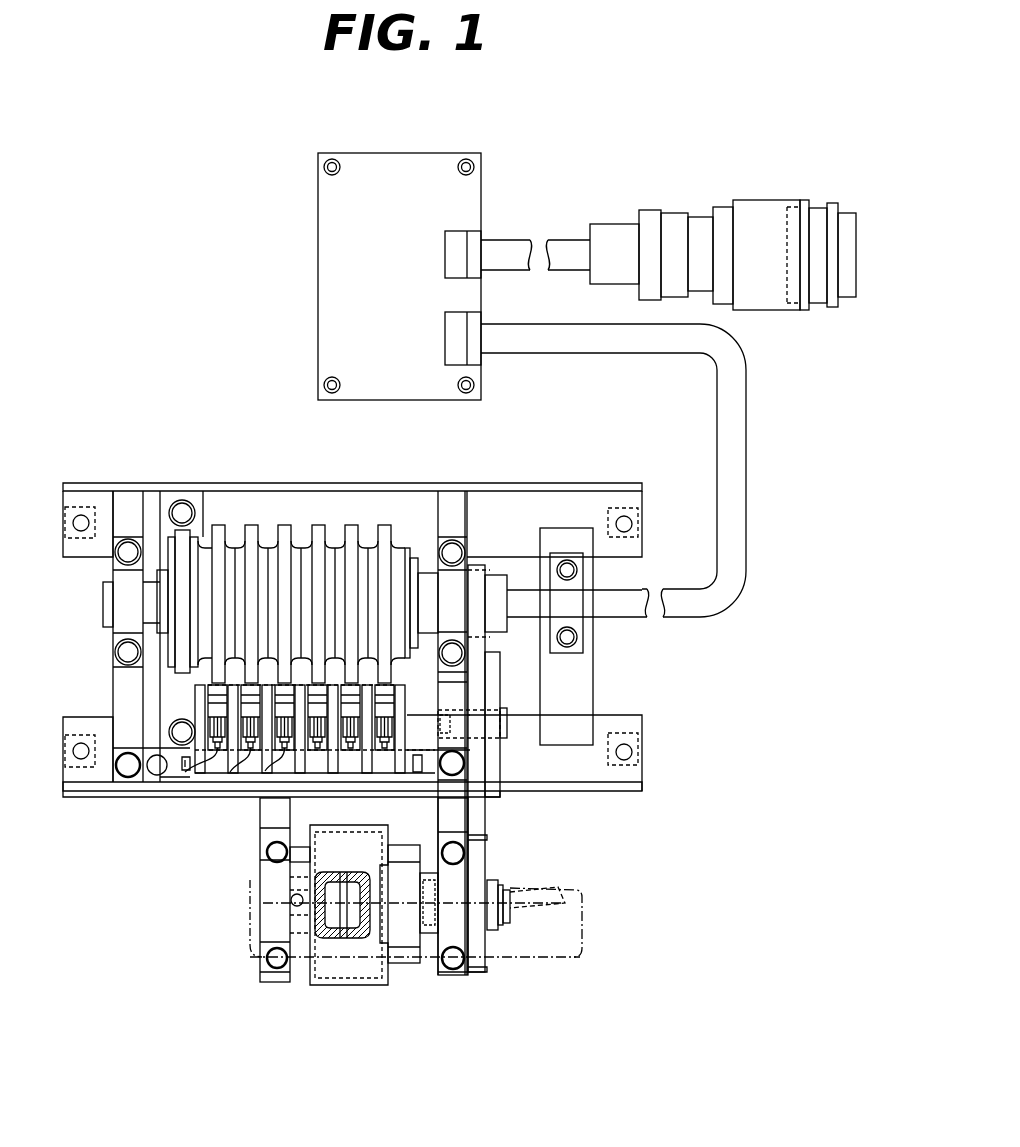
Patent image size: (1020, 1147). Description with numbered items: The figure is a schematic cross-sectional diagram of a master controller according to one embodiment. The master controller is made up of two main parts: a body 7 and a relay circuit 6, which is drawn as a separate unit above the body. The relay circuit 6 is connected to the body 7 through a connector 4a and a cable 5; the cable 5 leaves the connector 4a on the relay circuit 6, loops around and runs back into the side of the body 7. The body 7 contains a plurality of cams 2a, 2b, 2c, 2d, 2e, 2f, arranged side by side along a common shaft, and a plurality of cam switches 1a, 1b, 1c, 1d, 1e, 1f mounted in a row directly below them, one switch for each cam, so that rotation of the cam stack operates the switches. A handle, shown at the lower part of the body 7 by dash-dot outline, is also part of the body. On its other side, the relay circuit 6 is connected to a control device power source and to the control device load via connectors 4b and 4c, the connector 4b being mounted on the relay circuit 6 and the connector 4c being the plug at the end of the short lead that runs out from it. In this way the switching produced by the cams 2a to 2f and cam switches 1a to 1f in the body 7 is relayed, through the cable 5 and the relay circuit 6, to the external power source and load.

The cam switch 1a is at (185, 772).
The cam switch 1b is at (230, 772).
The cam switch 1c is at (265, 771).
The cam switch 1d is at (318, 748).
The cam switch 1e is at (350, 748).
The cam switch 1f is at (384, 748).
The cam 2a is at (218, 525).
The cam 2b is at (251, 525).
The cam 2c is at (284, 525).
The cam 2d is at (318, 525).
The cam 2e is at (351, 525).
The cam 2f is at (384, 525).
The connector 4a is at (478, 358).
The connector 4b is at (478, 240).
The connector 4c is at (847, 216).
The cable 5 is at (747, 443).
The relay circuit 6 is at (312, 224).
The body 7 is at (572, 817).